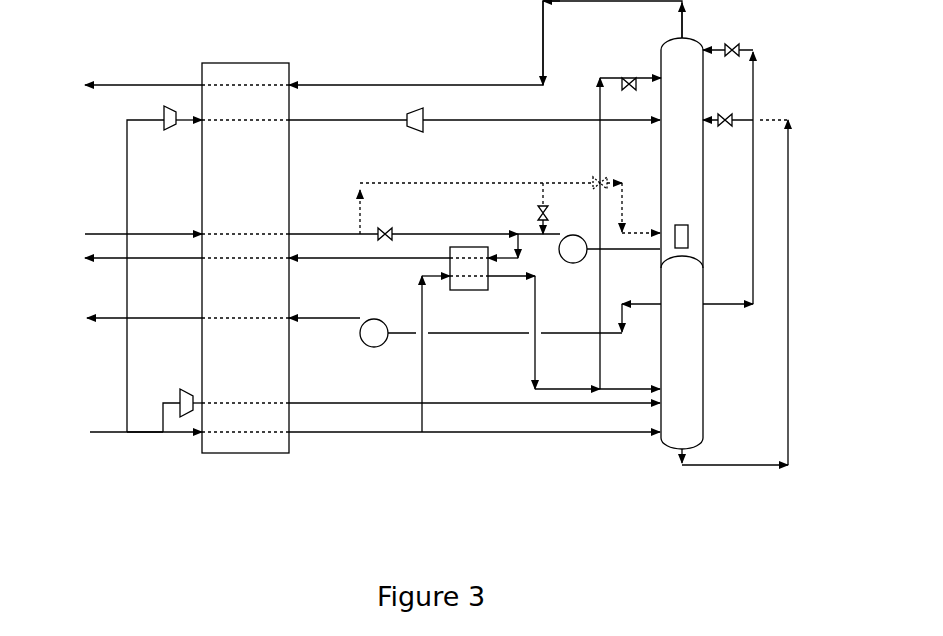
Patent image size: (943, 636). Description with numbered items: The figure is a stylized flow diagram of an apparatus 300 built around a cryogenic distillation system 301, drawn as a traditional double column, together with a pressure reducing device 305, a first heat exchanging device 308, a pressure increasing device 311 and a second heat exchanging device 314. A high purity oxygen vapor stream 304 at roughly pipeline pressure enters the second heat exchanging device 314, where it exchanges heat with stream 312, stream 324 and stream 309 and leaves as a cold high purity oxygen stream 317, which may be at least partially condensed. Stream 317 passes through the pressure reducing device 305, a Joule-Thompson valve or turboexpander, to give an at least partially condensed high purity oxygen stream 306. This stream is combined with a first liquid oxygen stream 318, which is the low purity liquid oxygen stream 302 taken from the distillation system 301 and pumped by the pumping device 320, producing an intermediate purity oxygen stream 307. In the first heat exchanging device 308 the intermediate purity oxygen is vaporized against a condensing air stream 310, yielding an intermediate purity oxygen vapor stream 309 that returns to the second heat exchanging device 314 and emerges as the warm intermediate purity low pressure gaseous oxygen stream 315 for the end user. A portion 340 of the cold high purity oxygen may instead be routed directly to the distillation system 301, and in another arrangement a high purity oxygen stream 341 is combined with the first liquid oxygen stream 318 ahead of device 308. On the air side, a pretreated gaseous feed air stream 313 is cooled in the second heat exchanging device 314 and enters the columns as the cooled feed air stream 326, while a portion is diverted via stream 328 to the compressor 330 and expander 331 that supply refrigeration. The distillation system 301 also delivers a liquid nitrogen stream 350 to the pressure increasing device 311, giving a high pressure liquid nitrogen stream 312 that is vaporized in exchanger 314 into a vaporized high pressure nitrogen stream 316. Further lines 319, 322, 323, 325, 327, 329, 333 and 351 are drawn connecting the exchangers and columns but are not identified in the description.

The apparatus 300 is at (113, 50).
The cryogenic distillation system 301 is at (703, 343).
The low purity liquid oxygen stream 302 is at (623, 242).
The high purity oxygen vapor stream 304 is at (128, 235).
The pressure reducing device 305 is at (403, 225).
The at least partially condensed high purity oxygen stream 306 is at (488, 223).
The intermediate purity oxygen stream 307 is at (522, 254).
The first heat exchanging device 308 is at (475, 290).
The intermediate purity oxygen vapor stream 309 is at (403, 269).
The condensing air stream 310 is at (421, 354).
The pressure increasing device 311 is at (373, 344).
The high pressure liquid nitrogen stream 312 is at (324, 311).
The gaseous feed air stream 313 is at (132, 432).
The second heat exchanging device 314 is at (245, 271).
The warm intermediate purity low pressure gaseous oxygen stream 315 is at (125, 260).
The vaporized high pressure nitrogen stream 316 is at (128, 322).
The cold high purity oxygen stream 317 is at (457, 208).
The first liquid oxygen stream 318 is at (520, 232).
The cooled stream to column 319 is at (574, 332).
The pumping device 320 is at (573, 257).
The bottoms product stream 322 is at (735, 457).
The reflux line 323 is at (745, 254).
The stream 324 is at (485, 43).
The residue gas stream 325 is at (126, 88).
The cooled gaseous feed air stream 326 is at (145, 445).
The feed stream to column 327 is at (474, 423).
The feed air portion stream 328 is at (158, 417).
The expanded overhead stream 329 is at (541, 112).
The compressor 330 is at (170, 118).
The expander 331 is at (413, 116).
The warmed stream 333 is at (348, 112).
The portion of high purity oxygen stream 340 is at (626, 202).
The high purity oxygen stream 341 is at (541, 198).
The liquid nitrogen stream 350 is at (184, 397).
The feed stream to column 351 is at (474, 393).